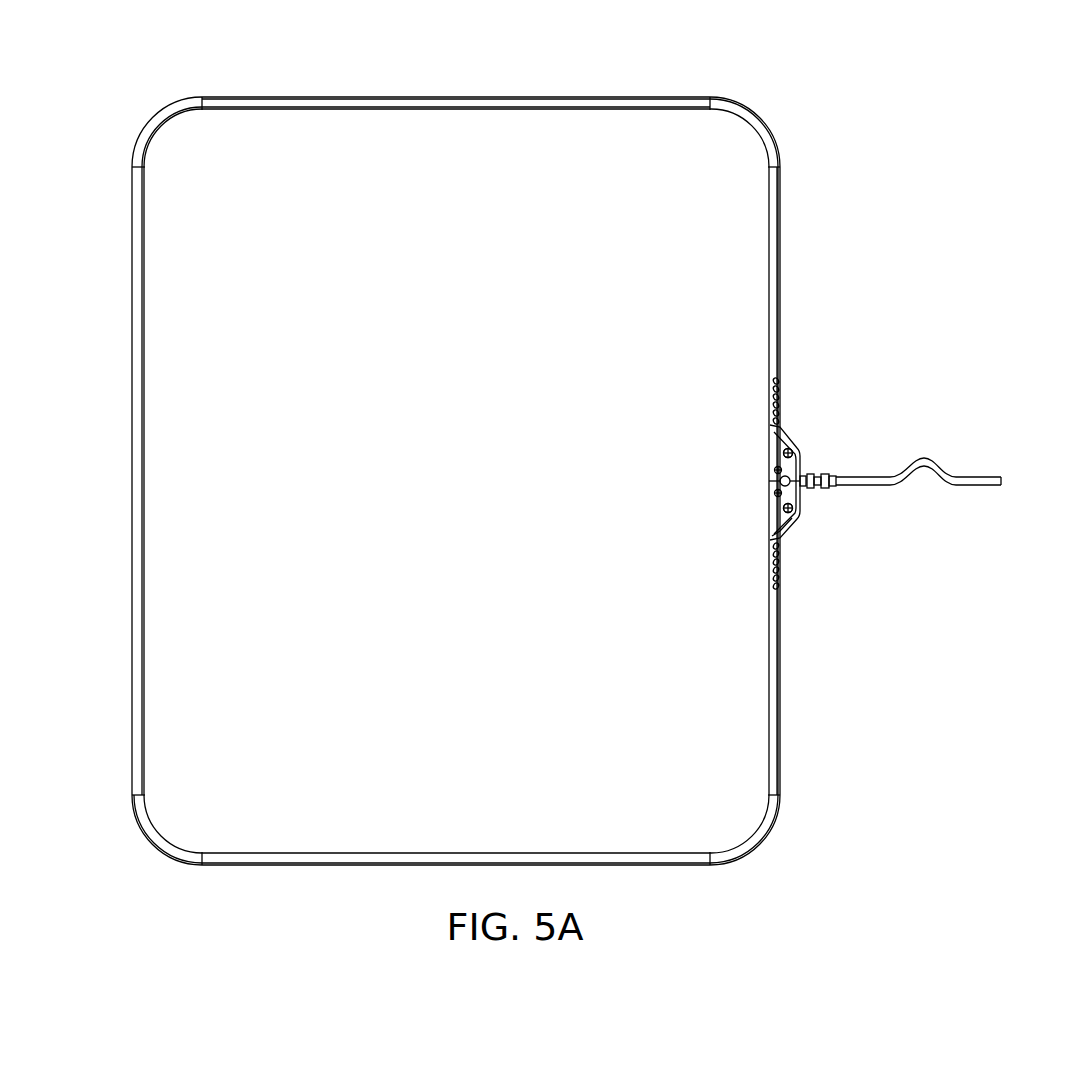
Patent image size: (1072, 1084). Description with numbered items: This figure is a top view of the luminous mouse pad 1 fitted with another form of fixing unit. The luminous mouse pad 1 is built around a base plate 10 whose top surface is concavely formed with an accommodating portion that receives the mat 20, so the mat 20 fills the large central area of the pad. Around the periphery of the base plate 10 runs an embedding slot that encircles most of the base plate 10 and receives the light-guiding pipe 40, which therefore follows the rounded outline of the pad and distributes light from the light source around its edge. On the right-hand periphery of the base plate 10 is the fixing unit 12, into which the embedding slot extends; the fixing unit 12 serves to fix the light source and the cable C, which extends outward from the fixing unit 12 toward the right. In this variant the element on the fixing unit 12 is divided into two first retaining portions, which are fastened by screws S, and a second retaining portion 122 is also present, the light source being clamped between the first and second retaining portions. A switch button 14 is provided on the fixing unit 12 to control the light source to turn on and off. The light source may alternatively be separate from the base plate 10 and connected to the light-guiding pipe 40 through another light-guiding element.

The luminous mouse pad 1 is at (94, 97).
The base plate 10 is at (777, 204).
The mat 20 is at (732, 150).
The light-guiding pipe 40 is at (780, 257).
The fixing unit 12 is at (797, 448).
The second retaining portion 122 is at (792, 518).
The switch button 14 is at (781, 478).
The screws S is at (783, 452).
The cable C is at (925, 463).